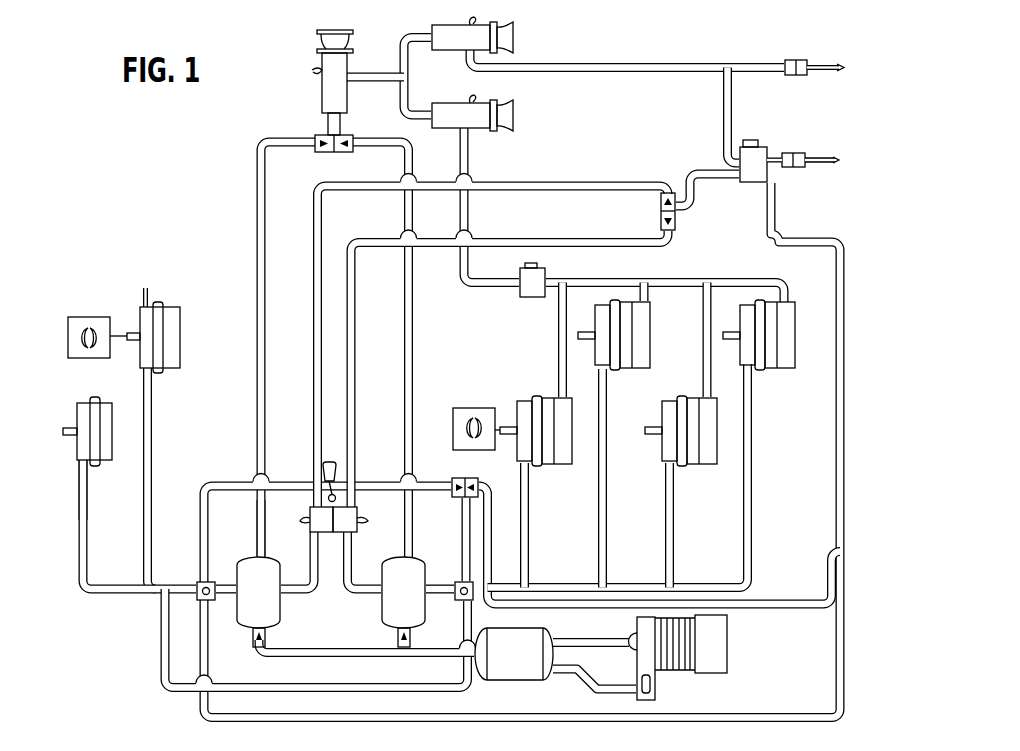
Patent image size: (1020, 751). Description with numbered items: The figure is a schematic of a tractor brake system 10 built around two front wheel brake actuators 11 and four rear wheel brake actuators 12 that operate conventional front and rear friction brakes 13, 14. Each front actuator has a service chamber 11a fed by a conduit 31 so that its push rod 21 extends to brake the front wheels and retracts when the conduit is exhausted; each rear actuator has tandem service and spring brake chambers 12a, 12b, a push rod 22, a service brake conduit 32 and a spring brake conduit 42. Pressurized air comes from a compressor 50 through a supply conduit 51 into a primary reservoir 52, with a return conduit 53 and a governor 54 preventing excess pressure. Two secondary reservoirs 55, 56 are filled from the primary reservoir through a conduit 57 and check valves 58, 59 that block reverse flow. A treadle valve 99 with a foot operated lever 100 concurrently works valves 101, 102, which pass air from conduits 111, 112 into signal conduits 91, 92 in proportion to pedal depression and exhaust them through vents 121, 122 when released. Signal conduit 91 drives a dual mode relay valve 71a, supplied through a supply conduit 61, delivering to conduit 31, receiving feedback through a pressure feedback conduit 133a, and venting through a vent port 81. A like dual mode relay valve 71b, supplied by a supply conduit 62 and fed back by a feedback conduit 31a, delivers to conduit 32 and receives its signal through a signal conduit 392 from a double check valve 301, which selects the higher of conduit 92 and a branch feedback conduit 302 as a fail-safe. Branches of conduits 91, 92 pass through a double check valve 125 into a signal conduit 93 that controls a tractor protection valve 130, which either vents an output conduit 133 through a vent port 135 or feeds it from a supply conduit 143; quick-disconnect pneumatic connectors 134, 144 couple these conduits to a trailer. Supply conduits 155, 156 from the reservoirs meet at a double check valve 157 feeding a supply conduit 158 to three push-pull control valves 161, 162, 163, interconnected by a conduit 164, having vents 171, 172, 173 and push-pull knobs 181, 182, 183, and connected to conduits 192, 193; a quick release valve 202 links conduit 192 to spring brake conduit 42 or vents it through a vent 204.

The tractor brake system 10 is at (230, 183).
The front wheel brake actuator 11 is at (176, 301).
The service chamber 11a is at (145, 290).
The rear wheel brake actuator 12 is at (534, 474).
The service brake chamber 12a is at (608, 312).
The spring brake chamber 12b is at (560, 466).
The front friction brake 13 is at (72, 317).
The rear friction brake 14 is at (455, 408).
The push rod 21 is at (130, 330).
The push rod 22 is at (508, 428).
The conduit 31 is at (153, 438).
The feedback conduit 31a is at (160, 645).
The service brake conduit 32 is at (600, 542).
The spring brake conduit 42 is at (593, 278).
The compressor 50 is at (721, 677).
The supply conduit 51 is at (562, 640).
The primary reservoir 52 is at (497, 672).
The return conduit 53 is at (584, 670).
The governor 54 is at (655, 688).
The secondary reservoir 55 is at (268, 614).
The secondary reservoir 56 is at (412, 614).
The conduit 57 is at (305, 658).
The check valve 58 is at (252, 640).
The check valve 59 is at (397, 640).
The supply conduit 61 is at (232, 582).
The supply conduit 62 is at (440, 582).
The dual mode relay valve 71a is at (200, 582).
The dual mode relay valve 71b is at (460, 582).
The vent port 81 is at (203, 603).
The signal conduit 91 is at (598, 182).
The signal conduit 92 is at (618, 242).
The signal conduit 93 is at (695, 204).
The treadle valve 99 is at (364, 509).
The foot operated lever 100 is at (340, 462).
The valve 101 is at (323, 519).
The valve 102 is at (346, 519).
The conduit 111 is at (300, 597).
The conduit 112 is at (375, 597).
The vent 121 is at (309, 522).
The vent 122 is at (361, 522).
The double check valve 125 is at (660, 212).
The tractor protection valve 130 is at (753, 198).
The output conduit 133 is at (773, 154).
The pressure feedback conduit 133a is at (846, 468).
The quick-disconnect pneumatic connector 134 is at (792, 168).
The vent port 135 is at (750, 139).
The supply conduit 143 is at (745, 63).
The quick-disconnect pneumatic connector 144 is at (806, 51).
The supply conduit 155 is at (257, 236).
The supply conduit 156 is at (403, 283).
The double check valve 157 is at (336, 151).
The supply conduit 158 is at (327, 123).
The push-pull control valve 161 is at (321, 98).
The push-pull control valve 162 is at (441, 103).
The push-pull control valve 163 is at (440, 25).
The conduit 164 is at (401, 70).
The vent 171 is at (313, 71).
The vent 172 is at (478, 95).
The vent 173 is at (478, 17).
The push-pull knob 181 is at (336, 28).
The push-pull knob 182 is at (514, 115).
The push-pull knob 183 is at (514, 40).
The conduit 192 is at (469, 156).
The conduit 193 is at (638, 64).
The quick release valve 202 is at (530, 298).
The vent 204 is at (530, 262).
The double check valve 301 is at (462, 477).
The branch feedback conduit 302 is at (763, 600).
The signal conduit 392 is at (462, 522).